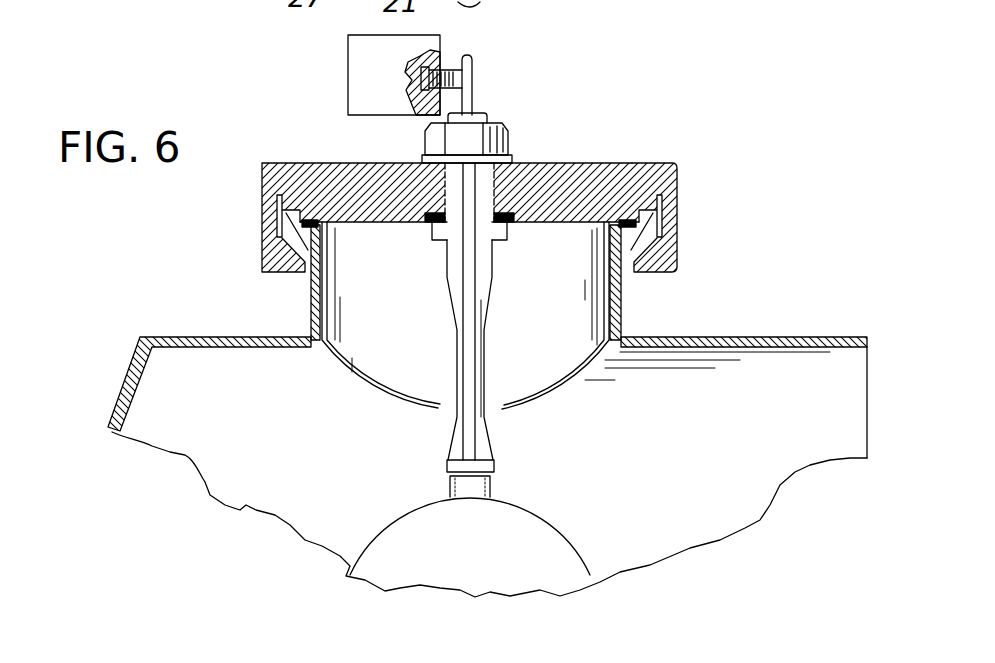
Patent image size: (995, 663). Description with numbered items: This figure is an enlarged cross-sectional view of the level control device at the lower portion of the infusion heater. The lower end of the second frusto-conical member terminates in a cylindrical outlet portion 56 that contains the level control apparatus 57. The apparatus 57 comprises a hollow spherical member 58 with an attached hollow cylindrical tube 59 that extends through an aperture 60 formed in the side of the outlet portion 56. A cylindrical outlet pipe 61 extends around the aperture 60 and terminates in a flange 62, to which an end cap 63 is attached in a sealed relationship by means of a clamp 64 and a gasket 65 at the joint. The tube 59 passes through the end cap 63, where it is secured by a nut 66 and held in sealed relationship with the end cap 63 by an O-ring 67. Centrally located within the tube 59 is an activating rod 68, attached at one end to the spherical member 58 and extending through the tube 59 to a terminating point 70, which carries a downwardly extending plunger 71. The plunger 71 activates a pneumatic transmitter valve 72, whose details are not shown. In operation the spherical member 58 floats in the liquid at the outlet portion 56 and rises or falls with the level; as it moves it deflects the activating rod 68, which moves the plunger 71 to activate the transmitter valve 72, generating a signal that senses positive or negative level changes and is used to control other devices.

The cylindrical outlet portion 56 is at (788, 338).
The level control apparatus 57 is at (703, 248).
The hollow spherical member 58 is at (545, 552).
The hollow cylindrical tube 59 is at (448, 442).
The aperture 60 is at (560, 353).
The cylindrical outlet pipe 61 is at (313, 299).
The flange 62 is at (300, 238).
The end cap 63 is at (372, 185).
The clamp 64 is at (270, 200).
The gasket 65 is at (322, 220).
The nut 66 is at (508, 137).
The O-ring 67 is at (514, 214).
The activating rod 68 is at (467, 277).
The terminating point 70 is at (473, 60).
The plunger 71 is at (455, 80).
The pneumatic transmitter valve 72 is at (372, 74).